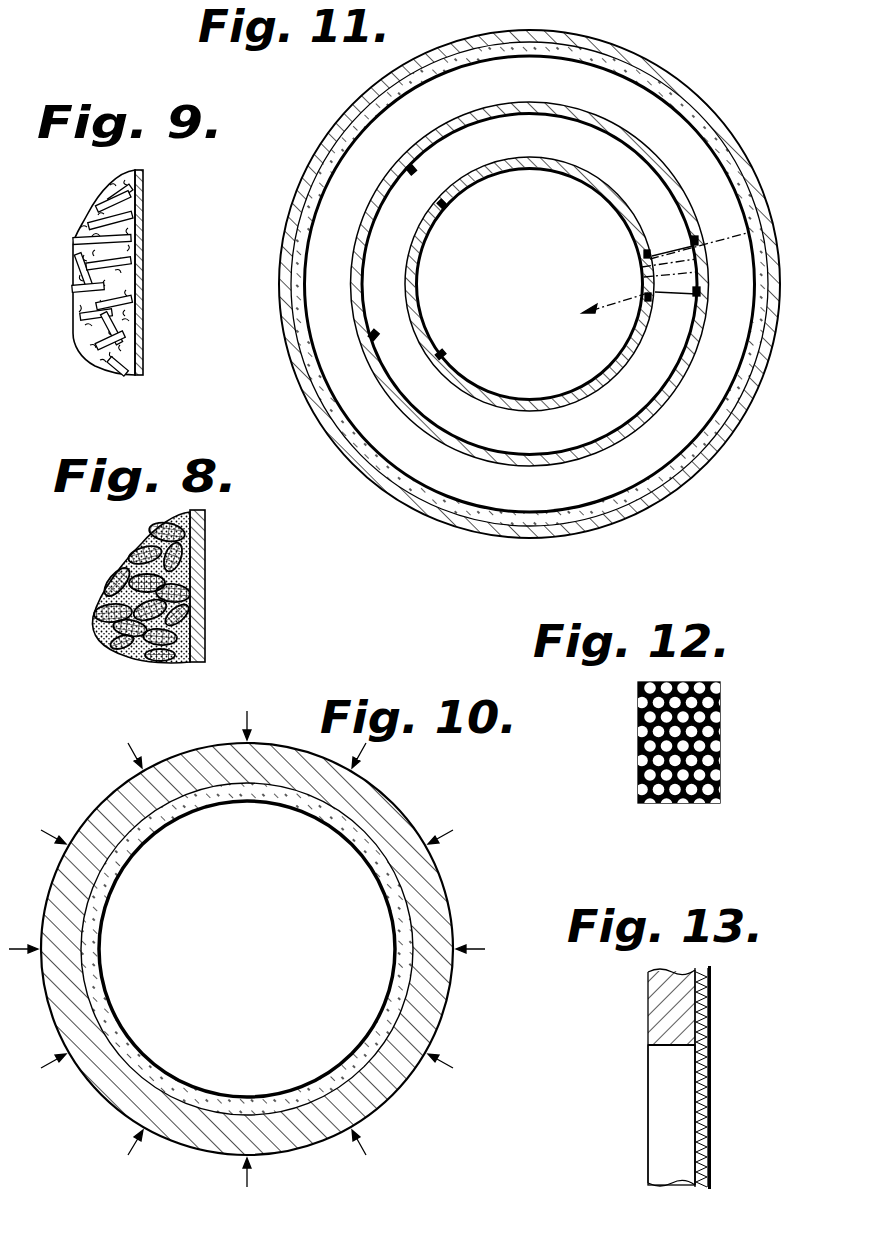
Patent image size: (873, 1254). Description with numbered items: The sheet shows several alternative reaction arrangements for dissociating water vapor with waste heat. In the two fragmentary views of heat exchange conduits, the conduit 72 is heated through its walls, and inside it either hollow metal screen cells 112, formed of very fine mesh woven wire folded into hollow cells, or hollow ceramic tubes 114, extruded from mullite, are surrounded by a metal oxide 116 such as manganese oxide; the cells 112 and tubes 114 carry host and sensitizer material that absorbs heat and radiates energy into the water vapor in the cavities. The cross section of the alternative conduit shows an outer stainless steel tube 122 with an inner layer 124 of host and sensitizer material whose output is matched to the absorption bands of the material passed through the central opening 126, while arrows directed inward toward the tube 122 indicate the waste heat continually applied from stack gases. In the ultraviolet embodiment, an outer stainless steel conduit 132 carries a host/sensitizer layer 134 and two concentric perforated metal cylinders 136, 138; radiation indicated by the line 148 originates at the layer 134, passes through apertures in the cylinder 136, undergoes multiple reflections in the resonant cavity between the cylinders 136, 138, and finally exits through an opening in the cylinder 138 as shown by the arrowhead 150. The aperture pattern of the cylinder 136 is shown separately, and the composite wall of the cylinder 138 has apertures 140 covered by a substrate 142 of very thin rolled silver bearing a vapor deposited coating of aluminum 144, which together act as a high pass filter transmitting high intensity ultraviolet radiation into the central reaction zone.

In FIG. 9, the conduit 72 is at (145, 345).
In FIG. 8, the conduit 72 is at (202, 530).
In FIG. 8, the hollow metal screen cells 112 is at (117, 580).
In FIG. 9, the hollow ceramic tubes 114 is at (120, 237).
In FIG. 9, the metal oxide 116 is at (82, 233).
In FIG. 8, the metal oxide 116 is at (185, 642).
In FIG. 10, the outer stainless steel tube 122 is at (385, 1080).
In FIG. 10, the inner layer of host and sensitizer material 124 is at (165, 1080).
In FIG. 10, the opening 126 is at (247, 949).
In FIG. 11, the outer stainless steel conduit 132 is at (326, 421).
In FIG. 11, the host/sensitizer layer 134 is at (468, 504).
In FIG. 11, the perforated metal cylinder 136 is at (673, 388).
In FIG. 12, the perforated metal cylinder 136 is at (720, 743).
In FIG. 11, the perforated metal cylinder 138 is at (578, 167).
In FIG. 13, the perforated metal cylinder 138 is at (648, 993).
In FIG. 13, the apertures 140 is at (673, 1122).
In FIG. 13, the substrate 142 is at (700, 1072).
In FIG. 13, the coating of aluminum 144 is at (711, 1162).
In FIG. 11, the radiation line 148 is at (673, 243).
In FIG. 11, the arrowhead 150 is at (626, 300).